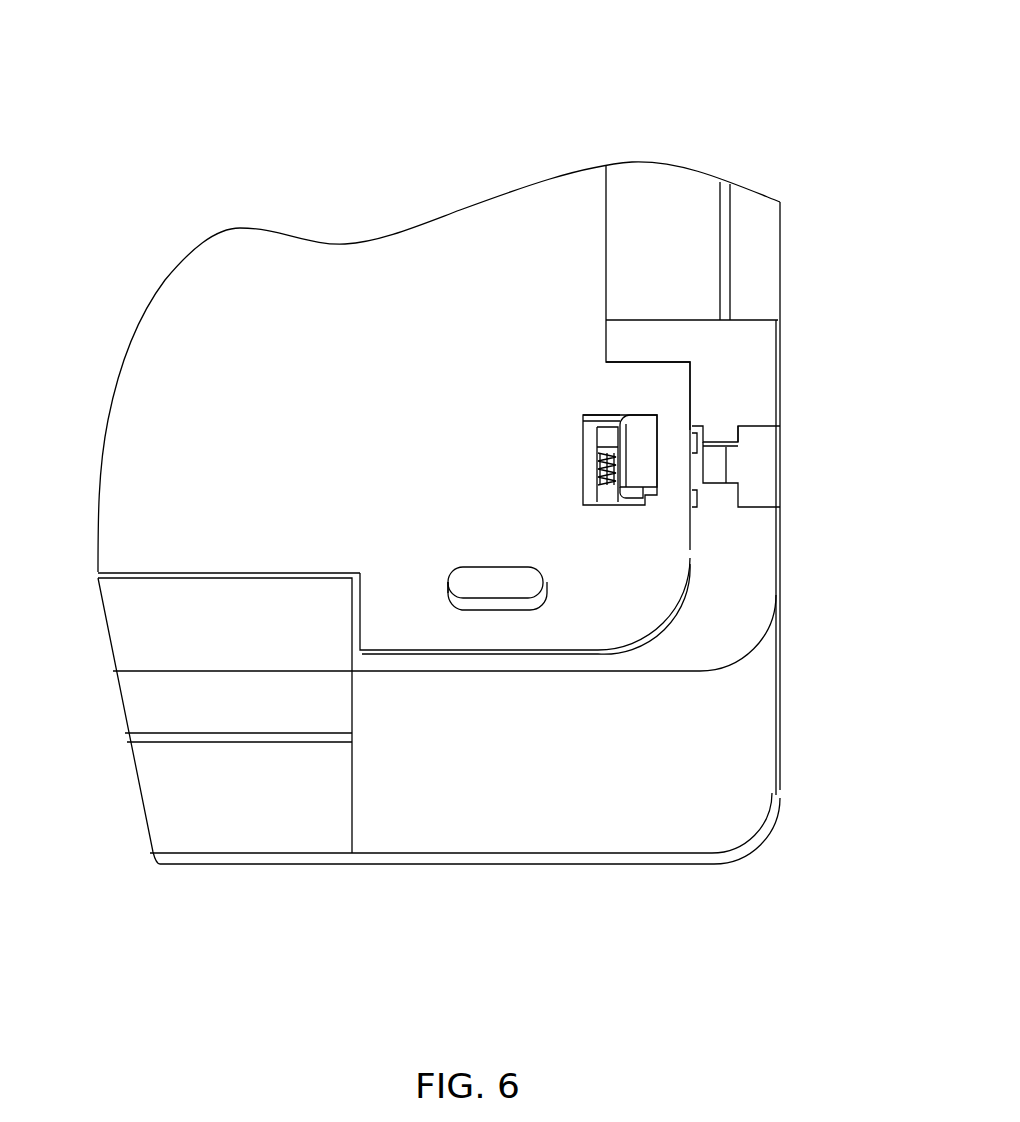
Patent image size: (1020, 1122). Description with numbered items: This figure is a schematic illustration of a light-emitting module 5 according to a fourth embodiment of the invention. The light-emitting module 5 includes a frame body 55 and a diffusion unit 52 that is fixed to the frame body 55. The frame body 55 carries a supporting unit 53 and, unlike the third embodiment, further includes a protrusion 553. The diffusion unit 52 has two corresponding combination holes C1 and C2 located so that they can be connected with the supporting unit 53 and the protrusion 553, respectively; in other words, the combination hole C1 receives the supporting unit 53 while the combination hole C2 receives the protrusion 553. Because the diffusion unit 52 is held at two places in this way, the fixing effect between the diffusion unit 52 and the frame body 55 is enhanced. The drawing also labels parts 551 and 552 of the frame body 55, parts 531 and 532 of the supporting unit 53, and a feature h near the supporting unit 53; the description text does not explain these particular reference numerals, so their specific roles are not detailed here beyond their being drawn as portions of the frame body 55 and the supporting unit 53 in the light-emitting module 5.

The light-emitting module 5 is at (65, 107).
The diffusion unit 52 is at (447, 282).
The frame body 55 is at (760, 3).
The cover plate 551 is at (752, 725).
The latch block 552 is at (757, 475).
The protrusion 553 is at (500, 583).
The supporting unit 53 is at (678, 565).
The latch block 531 is at (648, 470).
The spring 532 is at (608, 483).
The opening h is at (642, 436).
The combination hole C1 is at (600, 418).
The combination hole C2 is at (445, 580).